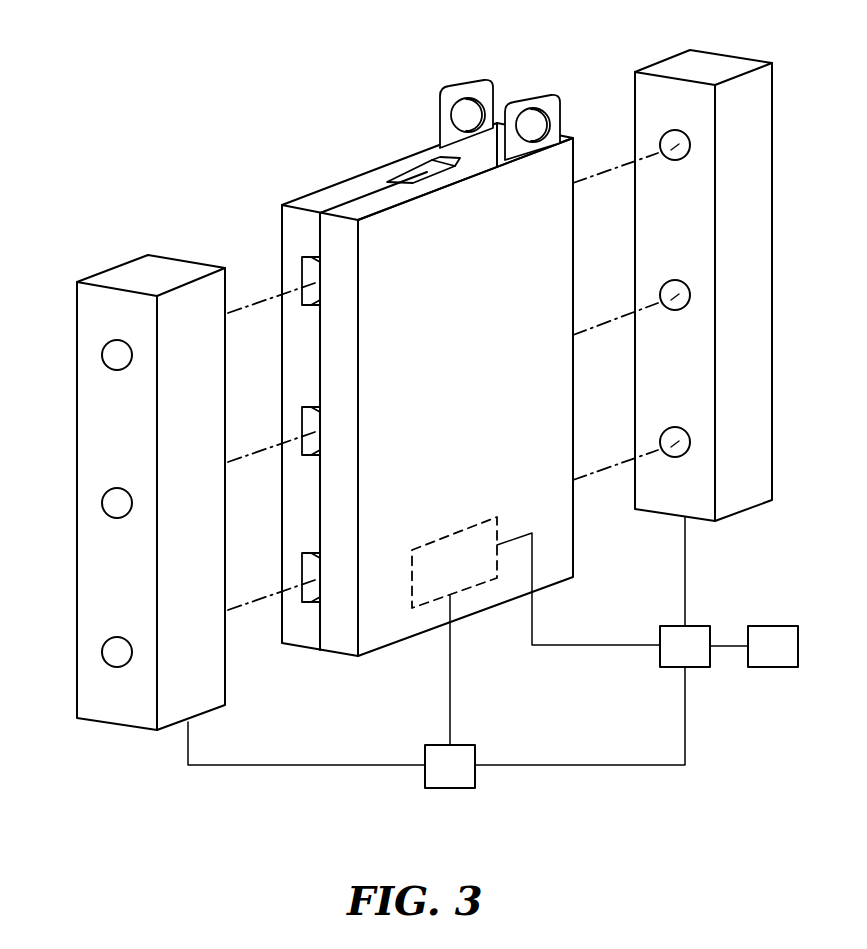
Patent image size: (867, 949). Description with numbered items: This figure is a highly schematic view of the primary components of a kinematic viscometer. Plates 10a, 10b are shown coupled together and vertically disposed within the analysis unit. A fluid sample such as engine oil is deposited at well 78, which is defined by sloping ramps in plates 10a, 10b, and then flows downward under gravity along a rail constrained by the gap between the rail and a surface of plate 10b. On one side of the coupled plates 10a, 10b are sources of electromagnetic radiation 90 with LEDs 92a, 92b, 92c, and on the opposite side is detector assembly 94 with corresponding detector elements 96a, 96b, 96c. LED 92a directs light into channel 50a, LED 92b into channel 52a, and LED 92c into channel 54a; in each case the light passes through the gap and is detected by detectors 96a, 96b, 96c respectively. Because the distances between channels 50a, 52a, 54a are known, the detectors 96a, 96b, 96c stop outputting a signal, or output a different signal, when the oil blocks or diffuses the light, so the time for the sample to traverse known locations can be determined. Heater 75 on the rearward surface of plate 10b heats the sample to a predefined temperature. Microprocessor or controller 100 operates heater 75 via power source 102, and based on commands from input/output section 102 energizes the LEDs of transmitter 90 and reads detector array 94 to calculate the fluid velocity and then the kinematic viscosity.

The plate 10a is at (322, 198).
The plate 10b is at (382, 200).
The well 78 is at (413, 178).
The channel 50a is at (317, 280).
The channel 52a is at (317, 429).
The channel 54a is at (317, 577).
The heater element 75 is at (463, 535).
The sources of electromagnetic radiation 90 is at (170, 272).
The LED 92a is at (107, 352).
The LED 92b is at (107, 500).
The LED 92c is at (107, 649).
The detector assembly 94 is at (702, 62).
The detector element 96a is at (665, 141).
The detector element 96b is at (665, 291).
The detector element 96c is at (665, 438).
The microprocessor or controller 100 is at (667, 626).
The power source and input/output section 102 is at (772, 626).